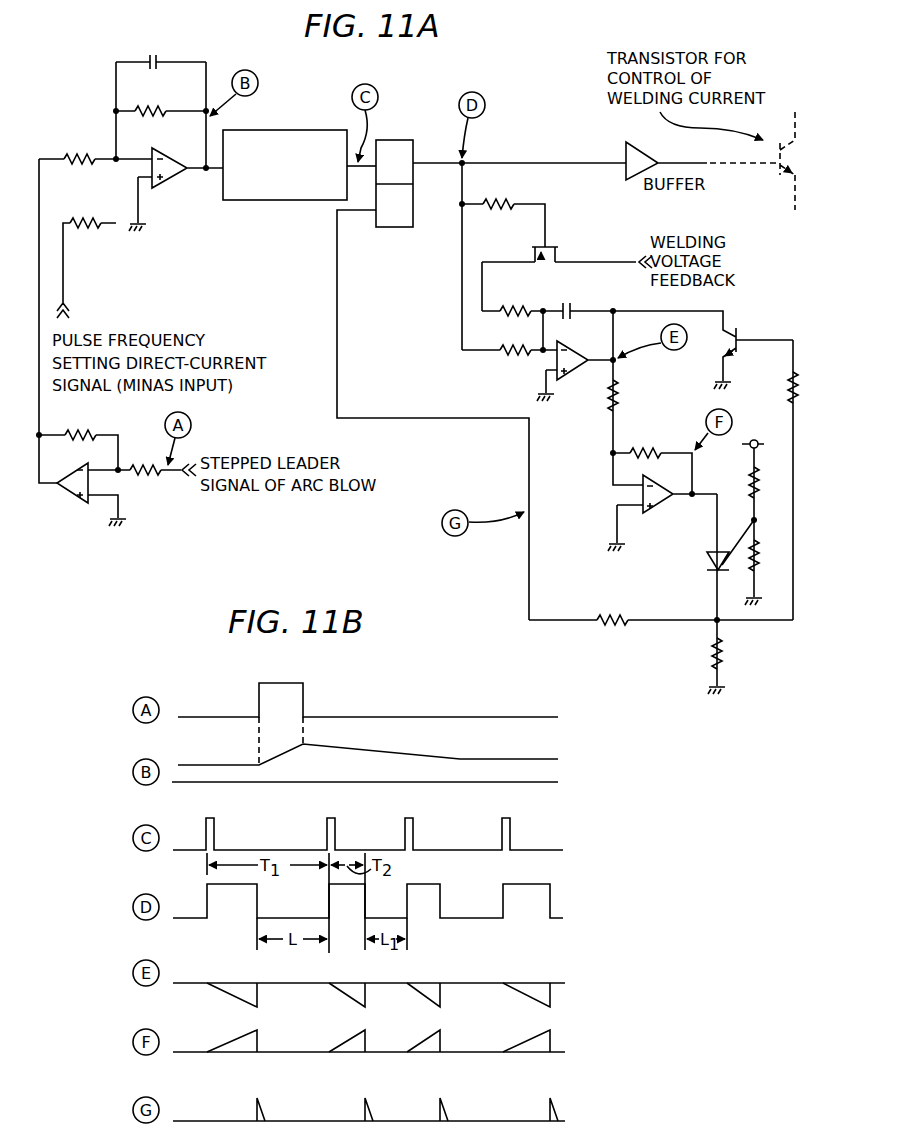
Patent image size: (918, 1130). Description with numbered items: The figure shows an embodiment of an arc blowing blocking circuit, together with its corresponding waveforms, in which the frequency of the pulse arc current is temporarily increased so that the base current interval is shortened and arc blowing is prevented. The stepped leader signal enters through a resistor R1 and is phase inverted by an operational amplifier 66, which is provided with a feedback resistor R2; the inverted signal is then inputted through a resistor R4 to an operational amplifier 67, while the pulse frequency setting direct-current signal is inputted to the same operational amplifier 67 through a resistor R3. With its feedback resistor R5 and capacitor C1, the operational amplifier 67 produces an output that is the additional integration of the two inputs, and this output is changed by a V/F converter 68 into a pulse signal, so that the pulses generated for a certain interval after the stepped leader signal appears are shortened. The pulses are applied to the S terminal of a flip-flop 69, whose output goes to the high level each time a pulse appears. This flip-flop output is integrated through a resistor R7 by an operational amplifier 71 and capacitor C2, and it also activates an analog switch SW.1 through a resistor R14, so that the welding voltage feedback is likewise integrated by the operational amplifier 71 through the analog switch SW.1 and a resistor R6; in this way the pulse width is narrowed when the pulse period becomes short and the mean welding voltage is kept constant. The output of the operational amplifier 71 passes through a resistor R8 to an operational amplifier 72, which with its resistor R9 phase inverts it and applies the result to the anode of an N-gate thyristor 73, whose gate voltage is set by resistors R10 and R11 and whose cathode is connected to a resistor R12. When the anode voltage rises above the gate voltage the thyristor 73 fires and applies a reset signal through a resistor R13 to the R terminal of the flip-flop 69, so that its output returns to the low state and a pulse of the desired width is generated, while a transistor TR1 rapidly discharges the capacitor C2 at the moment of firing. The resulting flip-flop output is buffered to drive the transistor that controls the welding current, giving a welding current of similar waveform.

The operational amplifier 66 is at (70, 483).
The operational amplifier 67 is at (164, 161).
The V/F converter 68 is at (307, 130).
The flip-flop 69 is at (393, 140).
The operational amplifier 71 is at (578, 349).
The operational amplifier 72 is at (641, 487).
The N-gate thyristor 73 is at (711, 561).
The resistor R1 is at (157, 481).
The resistor R2 is at (78, 440).
The resistor R3 is at (86, 258).
The resistor R4 is at (95, 149).
The resistor R5 is at (161, 102).
The resistor R6 is at (512, 302).
The resistor R7 is at (509, 340).
The resistor R8 is at (625, 395).
The resistor R9 is at (652, 462).
The resistor R10 is at (766, 480).
The resistor R11 is at (769, 562).
The resistor R12 is at (732, 657).
The resistor R13 is at (661, 610).
The resistor R14 is at (630, 400).
The capacitor C1 is at (161, 54).
The capacitor C2 is at (578, 301).
The transistor TR1 is at (703, 350).
The analog switch SW.1 is at (567, 267).